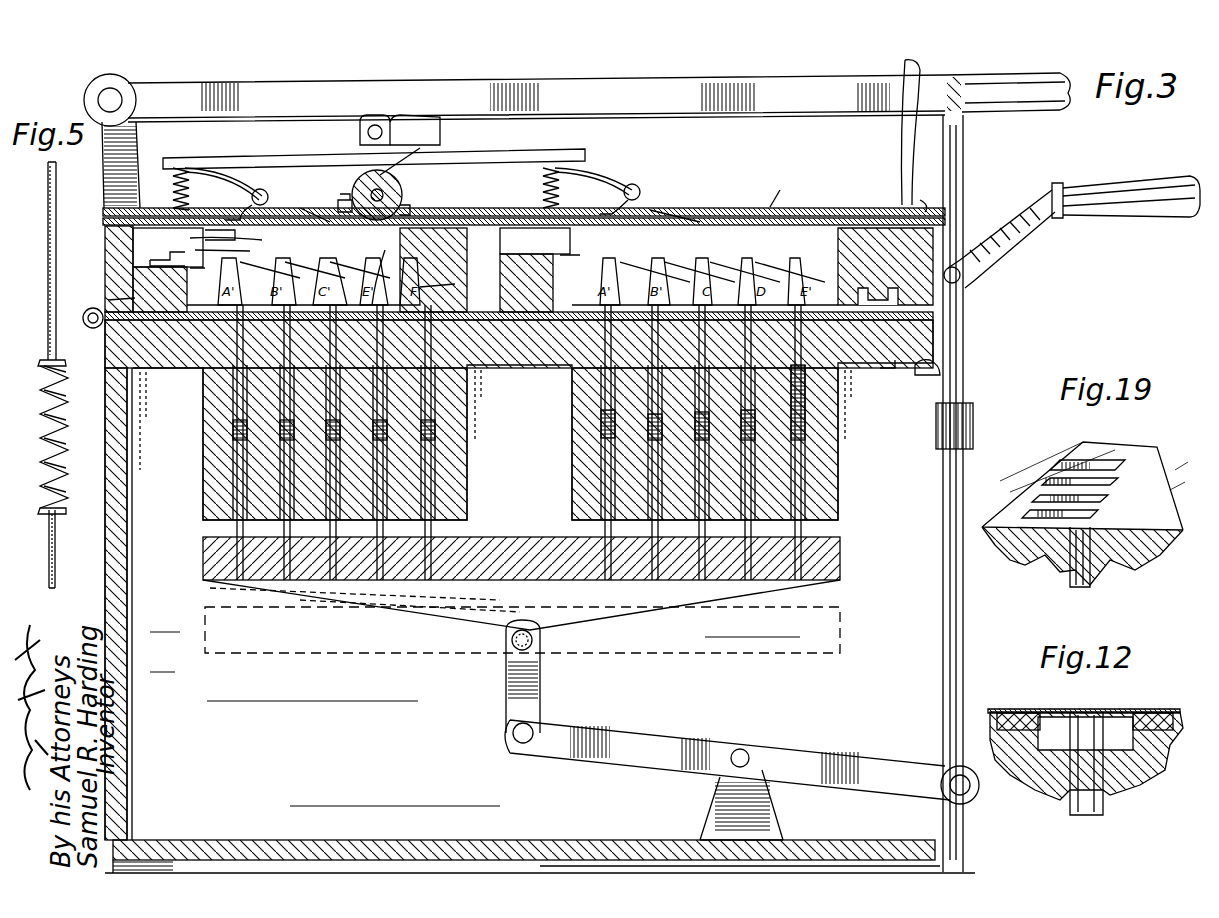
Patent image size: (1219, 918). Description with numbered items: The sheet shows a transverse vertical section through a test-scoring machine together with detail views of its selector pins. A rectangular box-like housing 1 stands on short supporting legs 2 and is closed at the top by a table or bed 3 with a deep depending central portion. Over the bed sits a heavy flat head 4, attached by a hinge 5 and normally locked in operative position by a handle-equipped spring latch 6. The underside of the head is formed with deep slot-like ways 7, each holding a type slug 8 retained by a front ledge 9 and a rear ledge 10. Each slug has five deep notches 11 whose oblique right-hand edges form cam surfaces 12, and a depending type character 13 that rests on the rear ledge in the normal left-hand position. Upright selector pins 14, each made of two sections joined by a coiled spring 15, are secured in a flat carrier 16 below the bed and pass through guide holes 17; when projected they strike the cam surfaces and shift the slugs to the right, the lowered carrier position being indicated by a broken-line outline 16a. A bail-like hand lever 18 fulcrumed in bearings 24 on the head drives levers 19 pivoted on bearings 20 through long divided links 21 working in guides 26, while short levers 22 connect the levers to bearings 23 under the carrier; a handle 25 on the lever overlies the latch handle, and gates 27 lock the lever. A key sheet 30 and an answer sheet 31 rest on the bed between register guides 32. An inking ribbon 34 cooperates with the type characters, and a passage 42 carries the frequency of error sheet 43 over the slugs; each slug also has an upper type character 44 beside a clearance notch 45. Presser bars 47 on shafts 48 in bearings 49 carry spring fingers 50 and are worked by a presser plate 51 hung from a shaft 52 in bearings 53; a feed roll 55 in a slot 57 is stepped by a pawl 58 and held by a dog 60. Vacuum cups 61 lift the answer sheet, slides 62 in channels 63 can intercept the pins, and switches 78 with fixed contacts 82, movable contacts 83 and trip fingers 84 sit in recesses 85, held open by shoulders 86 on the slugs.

In FIG. 3, the housing 1 is at (120, 566).
In FIG. 3, the supporting legs 2 is at (140, 868).
In FIG. 3, the bed 3 is at (193, 352).
In FIG. 19, the bed 3 is at (1140, 550).
In FIG. 12, the bed 3 is at (1160, 740).
In FIG. 3, the head 4 is at (495, 206).
In FIG. 3, the hinge 5 is at (88, 326).
In FIG. 3, the spring latch 6 is at (998, 248).
In FIG. 3, the ways 7 is at (582, 305).
In FIG. 3, the type slug 8 is at (512, 269).
In FIG. 3, the front ledge 9 is at (876, 266).
In FIG. 3, the rear ledge 10 is at (110, 345).
In FIG. 3, the notch 11 is at (700, 262).
In FIG. 3, the cam surface 12 is at (765, 268).
In FIG. 3, the type character 13 is at (240, 300).
In FIG. 3, the selector pin 14 is at (808, 528).
In FIG. 5, the selector pin 14 is at (50, 318).
In FIG. 19, the selector pin 14 is at (1072, 585).
In FIG. 12, the selector pin 14 is at (1080, 800).
In FIG. 3, the coiled spring 15 is at (806, 424).
In FIG. 5, the coiled spring 15 is at (68, 465).
In FIG. 3, the carrier 16 is at (210, 568).
In FIG. 3, the tray 16a is at (842, 612).
In FIG. 3, the guide hole 17 is at (233, 455).
In FIG. 3, the hand lever 18 is at (672, 114).
In FIG. 3, the lever 19 is at (640, 742).
In FIG. 3, the bearing 20 is at (720, 796).
In FIG. 3, the link 21 is at (965, 375).
In FIG. 3, the short lever 22 is at (545, 688).
In FIG. 3, the bearing 23 is at (514, 648).
In FIG. 3, the bearing 24 is at (104, 188).
In FIG. 3, the handle 25 is at (1020, 100).
In FIG. 3, the guide 26 is at (974, 428).
In FIG. 3, the gate 27 is at (904, 132).
In FIG. 3, the key sheet 30 is at (922, 376).
In FIG. 12, the key sheet 30 is at (1035, 715).
In FIG. 3, the answer sheet 31 is at (383, 270).
In FIG. 12, the answer sheet 31 is at (1058, 710).
In FIG. 3, the register guide 32 is at (104, 315).
In FIG. 3, the inking ribbon 34 is at (722, 193).
In FIG. 3, the passage 42 is at (783, 190).
In FIG. 3, the frequency of error sheet 43 is at (102, 212).
In FIG. 3, the type character 44 is at (590, 232).
In FIG. 3, the notch 45 is at (638, 251).
In FIG. 3, the presser bar 47 is at (238, 178).
In FIG. 3, the shaft 48 is at (270, 194).
In FIG. 3, the bearing 49 is at (270, 202).
In FIG. 3, the spring finger 50 is at (230, 210).
In FIG. 3, the presser plate 51 is at (495, 152).
In FIG. 3, the shaft 52 is at (402, 128).
In FIG. 3, the bearing 53 is at (360, 127).
In FIG. 3, the feed roll 55 is at (392, 183).
In FIG. 3, the slot 57 is at (412, 200).
In FIG. 3, the pawl 58 is at (400, 153).
In FIG. 3, the dog 60 is at (346, 193).
In FIG. 3, the vacuum cup 61 is at (884, 368).
In FIG. 19, the slide 62 is at (1108, 490).
In FIG. 3, the channel 63 is at (340, 302).
In FIG. 19, the channel 63 is at (1040, 535).
In FIG. 12, the channel 63 is at (1115, 740).
In FIG. 3, the switch 78 is at (108, 296).
In FIG. 3, the fixed contact 82 is at (402, 257).
In FIG. 3, the movable contact 83 is at (162, 258).
In FIG. 3, the trip finger 84 is at (237, 238).
In FIG. 3, the recess 85 is at (133, 235).
In FIG. 3, the shoulder 86 is at (233, 251).